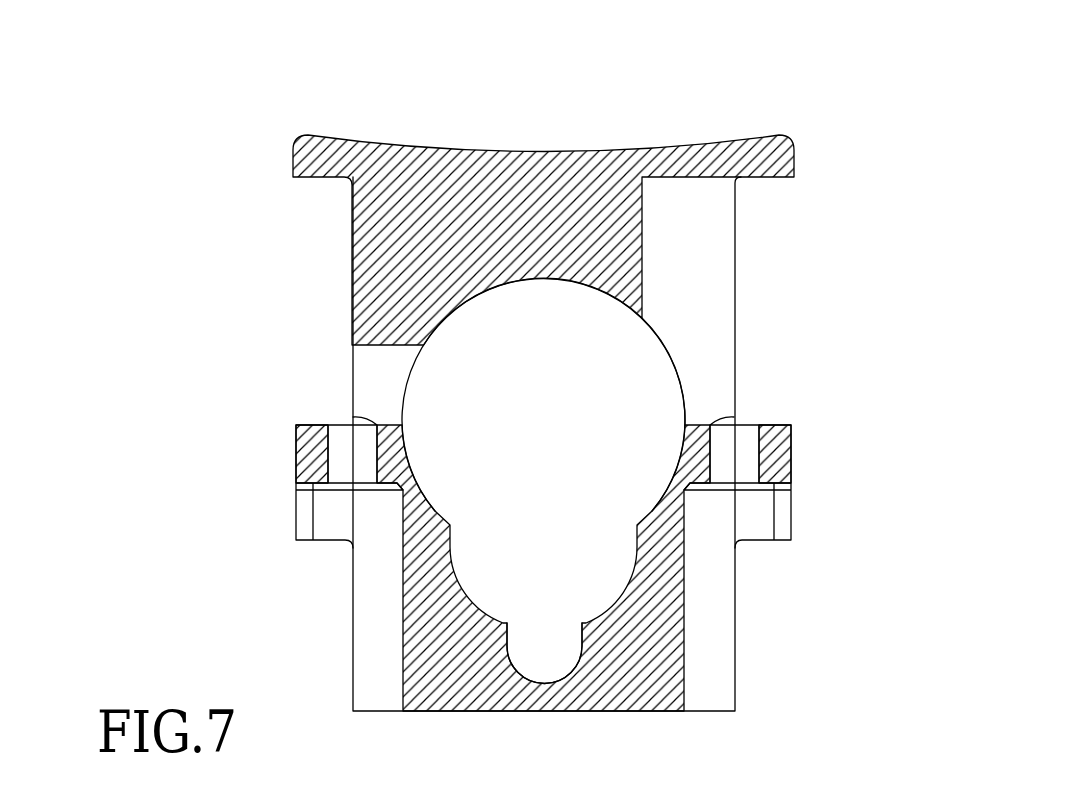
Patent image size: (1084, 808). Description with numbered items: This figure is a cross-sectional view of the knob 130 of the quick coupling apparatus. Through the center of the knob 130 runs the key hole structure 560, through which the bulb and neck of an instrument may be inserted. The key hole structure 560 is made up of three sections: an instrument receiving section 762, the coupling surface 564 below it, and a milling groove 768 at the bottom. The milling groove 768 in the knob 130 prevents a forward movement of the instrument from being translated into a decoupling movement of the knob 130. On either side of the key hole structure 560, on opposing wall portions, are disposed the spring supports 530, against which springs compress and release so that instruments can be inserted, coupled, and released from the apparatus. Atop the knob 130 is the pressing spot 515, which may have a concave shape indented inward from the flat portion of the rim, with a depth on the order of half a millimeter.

The knob 130 is at (268, 318).
The pressing spot 515 is at (591, 152).
The key hole structure 560 is at (668, 340).
The instrument receiving section 762 is at (685, 401).
The spring supports 530 is at (252, 423).
The coupling surface 564 is at (637, 567).
The milling groove 768 is at (560, 680).